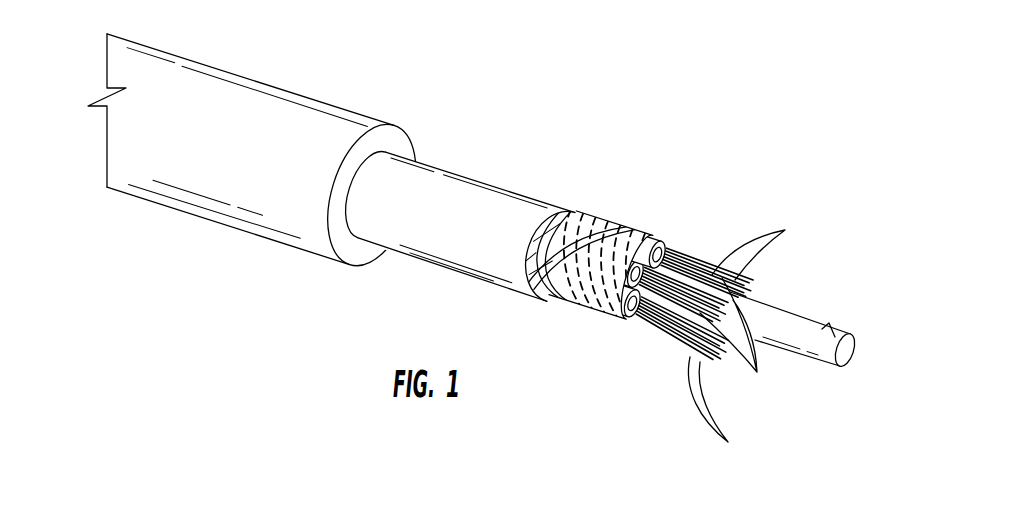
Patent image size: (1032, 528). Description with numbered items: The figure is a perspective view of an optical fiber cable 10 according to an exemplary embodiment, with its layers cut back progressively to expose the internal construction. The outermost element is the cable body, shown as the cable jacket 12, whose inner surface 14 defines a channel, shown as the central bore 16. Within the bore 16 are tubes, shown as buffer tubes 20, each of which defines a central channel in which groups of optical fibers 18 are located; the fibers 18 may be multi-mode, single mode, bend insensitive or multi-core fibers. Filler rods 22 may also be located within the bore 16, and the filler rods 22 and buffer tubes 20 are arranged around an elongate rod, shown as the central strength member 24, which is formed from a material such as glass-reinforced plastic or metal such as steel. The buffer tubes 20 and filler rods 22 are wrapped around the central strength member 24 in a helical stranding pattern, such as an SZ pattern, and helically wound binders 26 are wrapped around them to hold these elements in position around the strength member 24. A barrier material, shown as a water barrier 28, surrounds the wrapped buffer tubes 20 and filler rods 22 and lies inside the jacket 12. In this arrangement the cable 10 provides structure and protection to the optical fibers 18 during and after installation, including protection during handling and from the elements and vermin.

The cable 10 is at (512, 82).
The cable jacket 12 is at (283, 103).
The inner surface 14 is at (355, 242).
The central bore 16 is at (343, 221).
The optical fibers 18 is at (717, 339).
The buffer tubes 20 is at (583, 224).
The filler rods 22 is at (633, 318).
The central strength member 24 is at (852, 348).
The binders 26 is at (565, 296).
The water barrier 28 is at (512, 203).